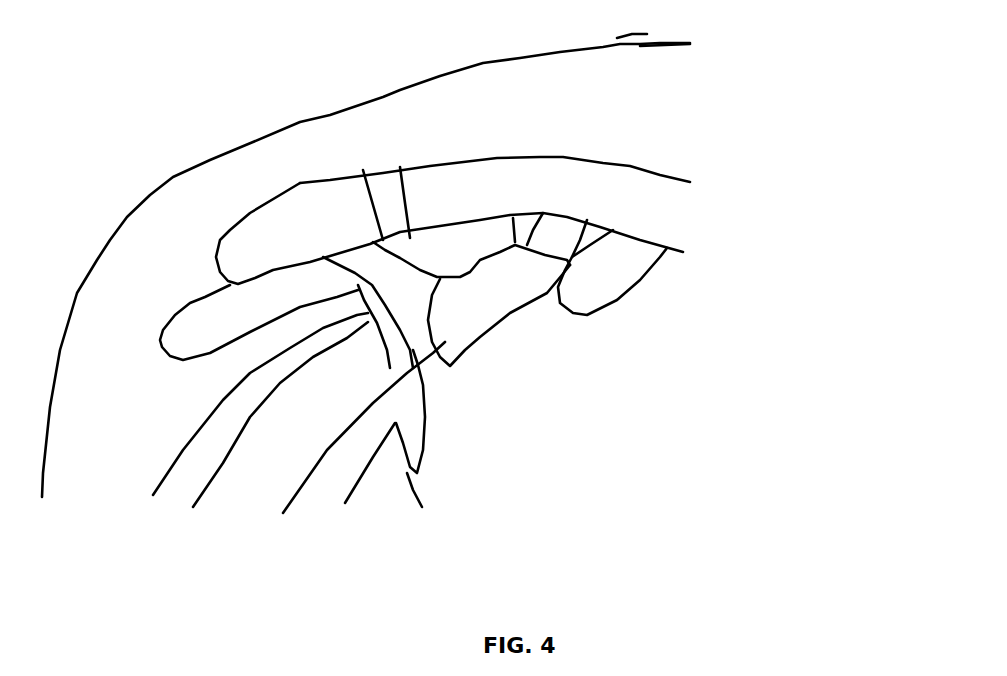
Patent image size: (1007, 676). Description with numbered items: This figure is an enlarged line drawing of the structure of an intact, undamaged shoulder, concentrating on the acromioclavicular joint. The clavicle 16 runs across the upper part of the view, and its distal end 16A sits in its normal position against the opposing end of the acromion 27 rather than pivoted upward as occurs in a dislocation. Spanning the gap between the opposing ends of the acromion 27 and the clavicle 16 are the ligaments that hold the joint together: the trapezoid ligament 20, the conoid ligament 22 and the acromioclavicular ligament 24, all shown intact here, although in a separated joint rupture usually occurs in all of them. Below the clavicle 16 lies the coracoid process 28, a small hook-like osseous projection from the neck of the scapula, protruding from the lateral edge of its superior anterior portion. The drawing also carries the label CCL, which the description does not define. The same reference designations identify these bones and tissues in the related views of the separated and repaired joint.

The clavicle 16 is at (657, 187).
The distal end of the clavicle 16A is at (427, 183).
The trapezoid ligament 20 is at (492, 240).
The conoid ligament 22 is at (565, 232).
The acromioclavicular ligament 24 is at (385, 187).
The acromion 27 is at (328, 207).
The coracoid process 28 is at (518, 295).
The cranial cruciate ligament CCL is at (412, 295).